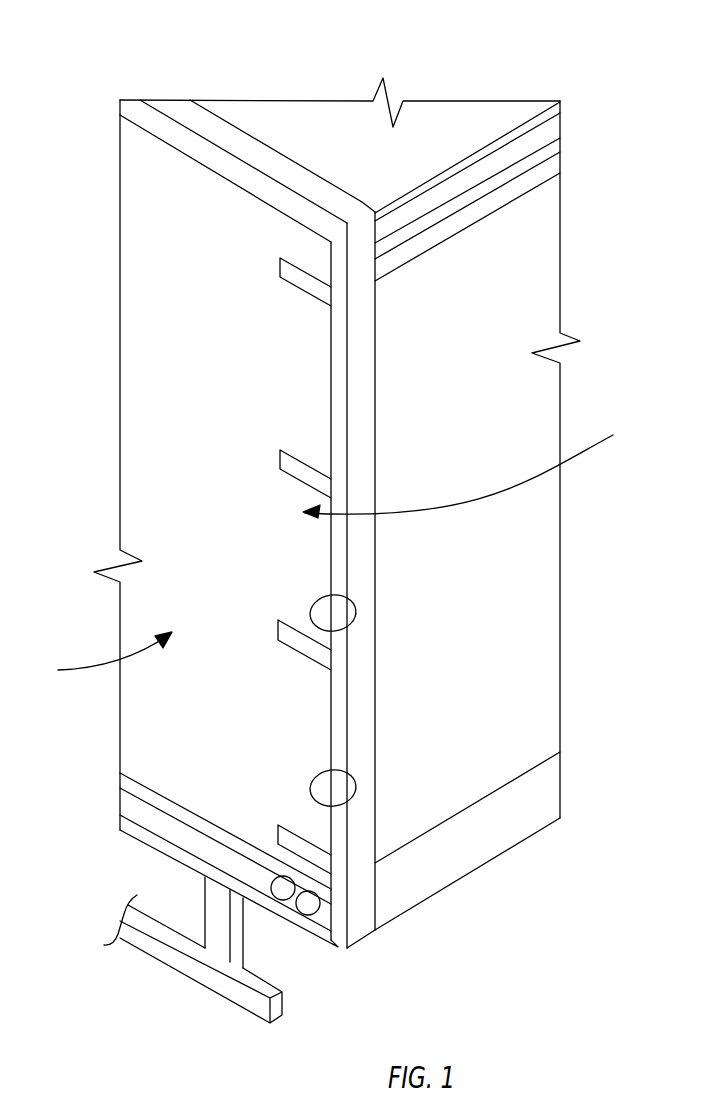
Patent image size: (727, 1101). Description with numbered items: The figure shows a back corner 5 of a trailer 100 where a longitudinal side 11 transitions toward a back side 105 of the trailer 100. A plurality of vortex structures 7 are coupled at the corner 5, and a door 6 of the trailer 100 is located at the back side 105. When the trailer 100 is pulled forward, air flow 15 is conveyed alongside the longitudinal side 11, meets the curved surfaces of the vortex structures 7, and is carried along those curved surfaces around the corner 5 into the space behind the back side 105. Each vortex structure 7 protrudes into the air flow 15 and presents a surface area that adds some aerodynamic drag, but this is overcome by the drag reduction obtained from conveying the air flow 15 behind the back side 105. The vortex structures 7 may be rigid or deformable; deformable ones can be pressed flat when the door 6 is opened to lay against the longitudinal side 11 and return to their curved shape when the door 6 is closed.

The trailer 100 is at (654, 38).
The back corner 5 is at (362, 365).
The door 6 is at (200, 430).
The vortex structures 7 is at (347, 612).
The longitudinal side 11 is at (480, 555).
The air flow 15 is at (486, 460).
The back side 105 is at (97, 658).